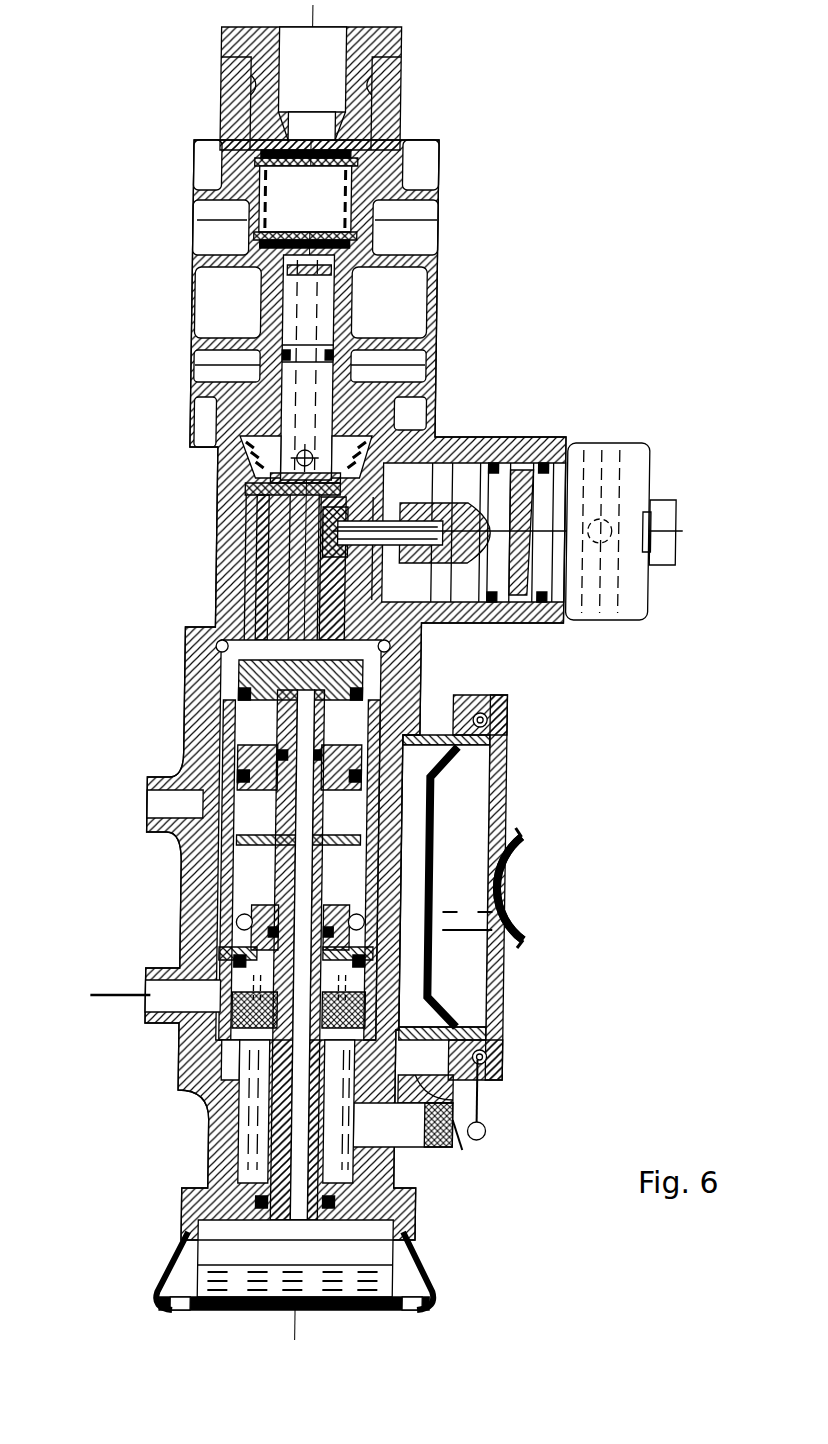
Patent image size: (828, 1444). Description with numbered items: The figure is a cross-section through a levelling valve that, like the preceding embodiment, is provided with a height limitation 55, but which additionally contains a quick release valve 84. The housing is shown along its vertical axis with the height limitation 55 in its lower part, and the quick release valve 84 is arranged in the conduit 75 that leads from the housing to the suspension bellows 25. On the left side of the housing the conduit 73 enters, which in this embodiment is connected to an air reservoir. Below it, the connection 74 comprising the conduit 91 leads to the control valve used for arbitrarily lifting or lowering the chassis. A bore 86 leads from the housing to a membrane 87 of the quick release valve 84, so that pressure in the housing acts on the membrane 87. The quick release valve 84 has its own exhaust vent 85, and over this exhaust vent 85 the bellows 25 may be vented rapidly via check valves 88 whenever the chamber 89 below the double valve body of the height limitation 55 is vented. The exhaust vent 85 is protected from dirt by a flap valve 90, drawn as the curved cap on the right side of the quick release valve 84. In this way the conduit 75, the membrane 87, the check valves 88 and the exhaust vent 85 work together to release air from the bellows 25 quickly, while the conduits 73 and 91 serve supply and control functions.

The suspension bellows 25 is at (501, 1131).
The height limitation 55 is at (150, 948).
The conduit 73 is at (114, 997).
The connection 74 is at (399, 1128).
The conduit 75 is at (483, 1094).
The quick release valve 84 is at (536, 826).
The exhaust vent 85 is at (470, 893).
The bore 86 is at (407, 1057).
The membrane 87 is at (440, 980).
The check valves 88 is at (488, 720).
The chamber 89 is at (262, 1122).
The flap valve 90 is at (515, 871).
The conduit 91 is at (461, 1142).